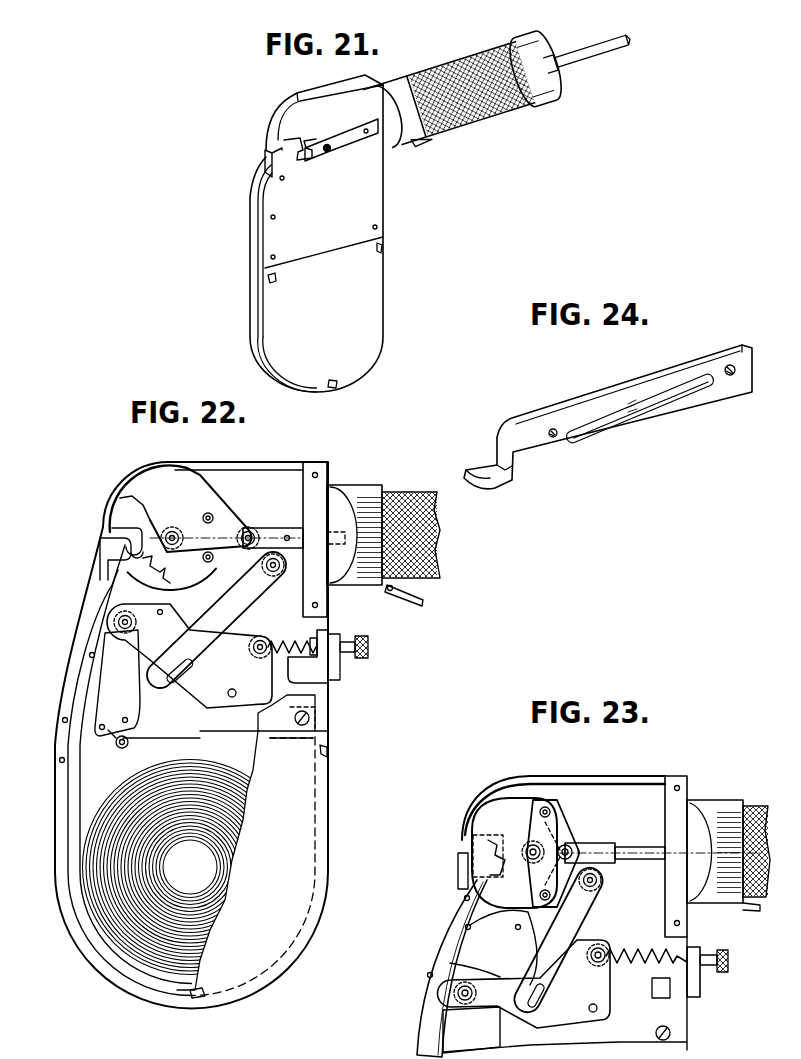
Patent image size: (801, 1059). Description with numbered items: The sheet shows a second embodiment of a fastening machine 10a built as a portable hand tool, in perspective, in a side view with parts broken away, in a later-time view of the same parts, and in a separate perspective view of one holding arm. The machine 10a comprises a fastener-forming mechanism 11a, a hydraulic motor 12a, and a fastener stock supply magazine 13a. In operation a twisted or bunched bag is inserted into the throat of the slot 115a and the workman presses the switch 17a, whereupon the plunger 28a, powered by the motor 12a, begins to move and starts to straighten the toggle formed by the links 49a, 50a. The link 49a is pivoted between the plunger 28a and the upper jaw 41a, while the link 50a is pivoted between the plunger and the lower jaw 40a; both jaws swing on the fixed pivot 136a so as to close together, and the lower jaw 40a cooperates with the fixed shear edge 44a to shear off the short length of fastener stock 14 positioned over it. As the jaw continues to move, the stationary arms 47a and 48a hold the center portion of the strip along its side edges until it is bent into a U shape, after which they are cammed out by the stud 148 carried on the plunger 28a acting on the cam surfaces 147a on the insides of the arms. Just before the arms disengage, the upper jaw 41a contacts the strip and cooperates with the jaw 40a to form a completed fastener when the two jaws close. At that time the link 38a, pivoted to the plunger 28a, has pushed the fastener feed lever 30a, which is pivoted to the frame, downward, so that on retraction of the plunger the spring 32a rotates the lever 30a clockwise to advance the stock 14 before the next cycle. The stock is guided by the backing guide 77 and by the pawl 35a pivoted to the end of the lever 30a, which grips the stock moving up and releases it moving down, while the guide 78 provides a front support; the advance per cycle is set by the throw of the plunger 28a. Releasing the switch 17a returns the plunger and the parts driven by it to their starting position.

In FIG. 21, the fastening machine 10a is at (463, 228).
In FIG. 21, the fastener-forming mechanism 11a is at (272, 199).
In FIG. 21, the hydraulic motor 12a is at (478, 117).
In FIG. 21, the fastener stock supply magazine 13a is at (272, 306).
In FIG. 22, the fastener stock 14 is at (103, 580).
In FIG. 23, the fastener stock 14 is at (465, 927).
In FIG. 22, the switch 17a is at (401, 601).
In FIG. 22, the plunger 28a is at (272, 530).
In FIG. 23, the plunger 28a is at (637, 848).
In FIG. 22, the fastener feed lever 30a is at (196, 690).
In FIG. 23, the fastener feed lever 30a is at (573, 1013).
In FIG. 22, the spring 32a is at (274, 660).
In FIG. 23, the spring 32a is at (630, 966).
In FIG. 22, the pawl 35a is at (110, 618).
In FIG. 23, the pawl 35a is at (452, 968).
In FIG. 22, the link 38a is at (245, 616).
In FIG. 23, the link 38a is at (582, 917).
In FIG. 22, the lower jaw 40a is at (180, 592).
In FIG. 23, the lower jaw 40a is at (484, 877).
In FIG. 22, the upper jaw 41a is at (158, 478).
In FIG. 23, the upper jaw 41a is at (503, 805).
In FIG. 22, the fixed shear edge 44a is at (100, 594).
In FIG. 23, the fixed shear edge 44a is at (466, 892).
In FIG. 24, the stationary arm 47a is at (530, 459).
In FIG. 22, the stationary arm 47a is at (128, 552).
In FIG. 21, the stationary arm 48a is at (352, 141).
In FIG. 22, the link 49a is at (236, 527).
In FIG. 23, the link 49a is at (567, 830).
In FIG. 22, the link 50a is at (205, 563).
In FIG. 23, the link 50a is at (596, 890).
In FIG. 22, the backing guide 77 is at (68, 710).
In FIG. 23, the backing guide 77 is at (426, 986).
In FIG. 22, the guide 78 is at (100, 687).
In FIG. 23, the guide 78 is at (456, 1030).
In FIG. 21, the slot 115a is at (266, 143).
In FIG. 22, the slot 115a is at (112, 528).
In FIG. 22, the fixed pivot 136a is at (172, 532).
In FIG. 23, the fixed pivot 136a is at (524, 848).
In FIG. 24, the cam surface 147a is at (631, 412).
In FIG. 22, the stud 148 is at (250, 548).
In FIG. 23, the stud 148 is at (571, 848).